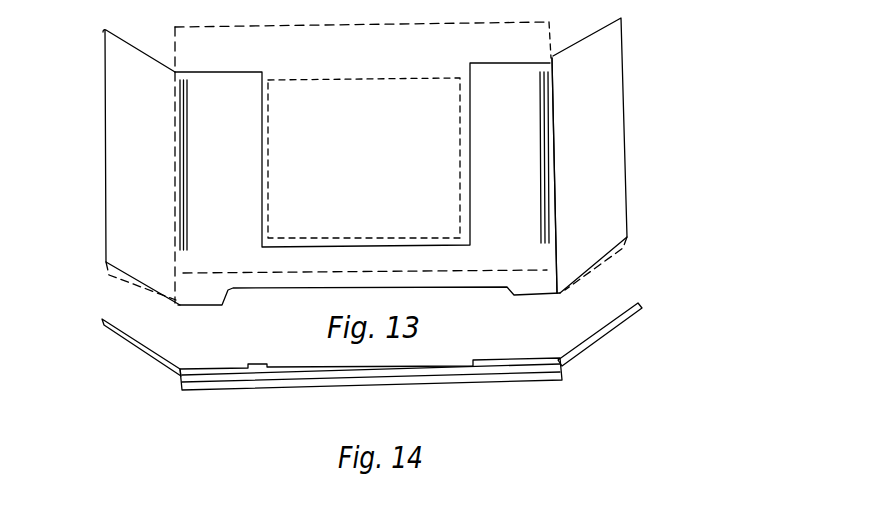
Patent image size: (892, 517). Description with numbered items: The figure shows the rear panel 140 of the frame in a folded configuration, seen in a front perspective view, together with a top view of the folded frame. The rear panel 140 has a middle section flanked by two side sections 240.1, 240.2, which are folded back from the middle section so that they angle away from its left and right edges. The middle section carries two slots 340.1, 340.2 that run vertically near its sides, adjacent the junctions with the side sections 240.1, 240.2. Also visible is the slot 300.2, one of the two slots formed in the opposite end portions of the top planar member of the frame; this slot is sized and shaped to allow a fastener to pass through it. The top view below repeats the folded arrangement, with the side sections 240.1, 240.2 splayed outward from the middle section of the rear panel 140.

The rear panel 140 is at (736, 106).
The slot 300.2 is at (553, 100).
The side section 240.1 is at (141, 213).
The side section 240.2 is at (598, 197).
The slot 340.1 is at (177, 231).
The slot 340.2 is at (550, 221).